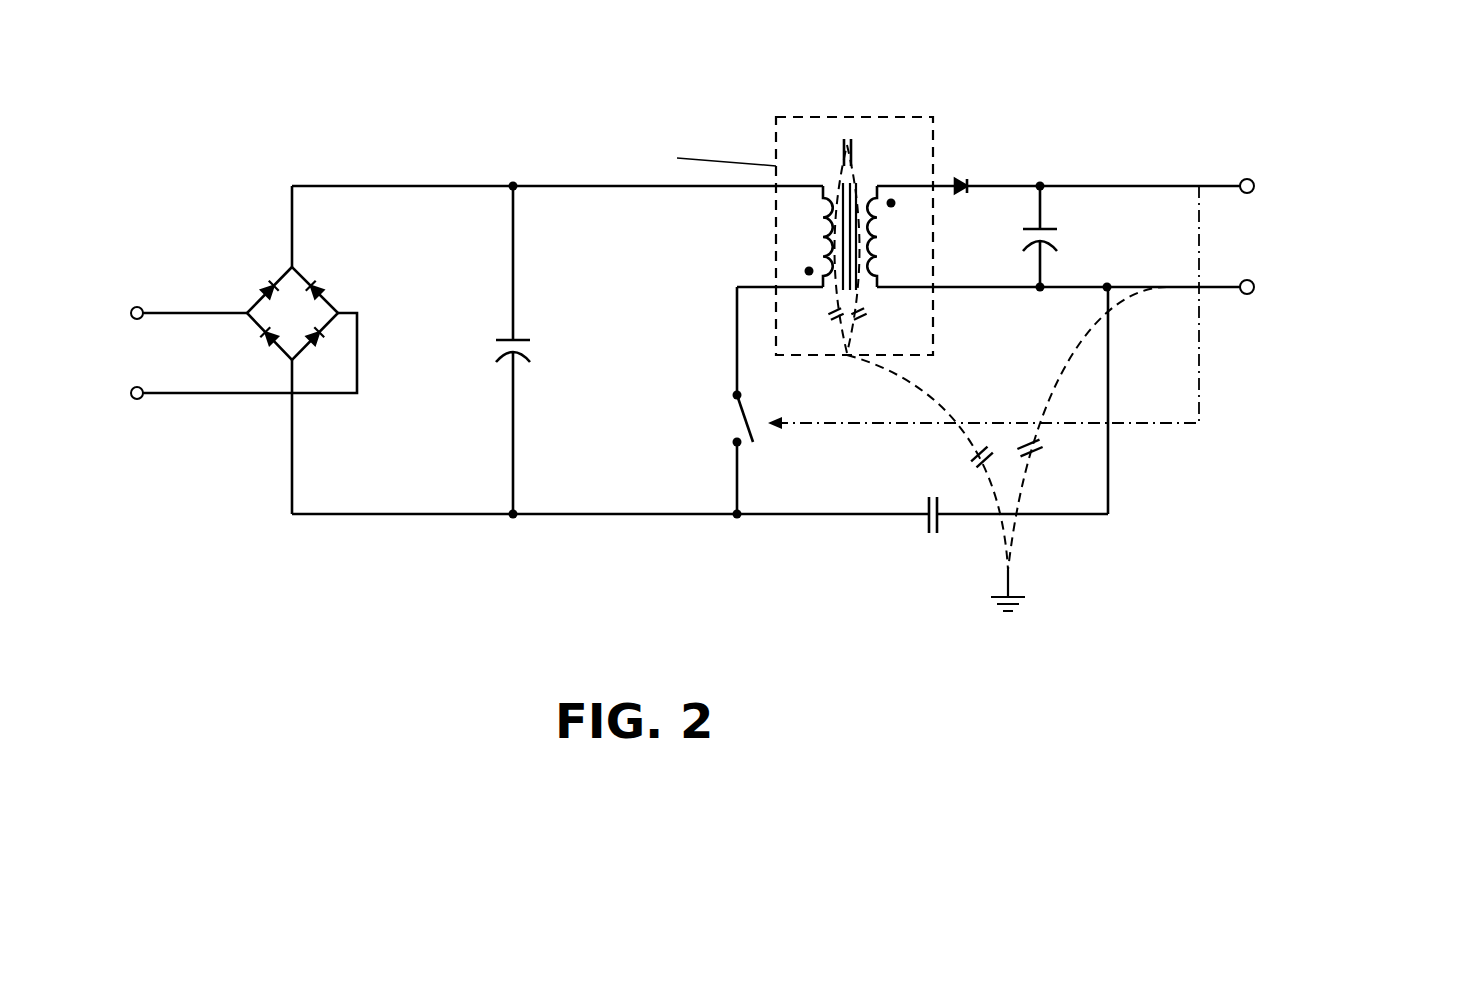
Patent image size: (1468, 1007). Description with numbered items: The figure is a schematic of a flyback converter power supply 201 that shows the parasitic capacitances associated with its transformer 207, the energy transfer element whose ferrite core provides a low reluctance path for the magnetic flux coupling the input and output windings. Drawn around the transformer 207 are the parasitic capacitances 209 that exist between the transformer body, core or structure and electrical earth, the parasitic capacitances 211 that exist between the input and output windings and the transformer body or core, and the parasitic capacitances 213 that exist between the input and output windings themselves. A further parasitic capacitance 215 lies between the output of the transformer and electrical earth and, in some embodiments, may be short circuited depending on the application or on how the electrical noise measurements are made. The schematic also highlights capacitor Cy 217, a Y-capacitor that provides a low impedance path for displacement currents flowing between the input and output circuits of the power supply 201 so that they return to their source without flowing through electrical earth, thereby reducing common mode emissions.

The power supply 201 is at (1246, 66).
The transformer 207 is at (776, 122).
The parasitic capacitances 209 is at (973, 468).
The parasitic capacitances 211 is at (826, 330).
The parasitic capacitances 213 is at (852, 142).
The parasitic capacitance 215 is at (1042, 452).
The capacitor Cy 217 is at (923, 502).